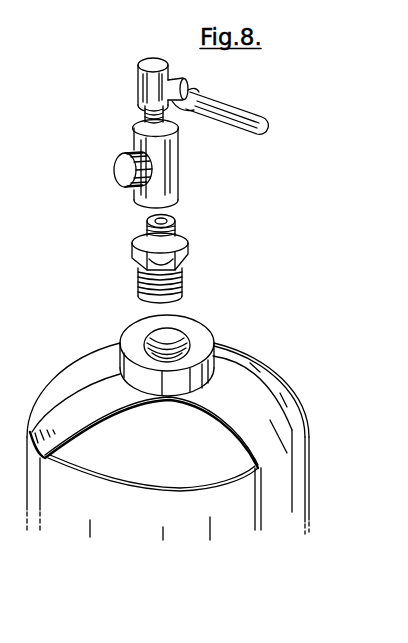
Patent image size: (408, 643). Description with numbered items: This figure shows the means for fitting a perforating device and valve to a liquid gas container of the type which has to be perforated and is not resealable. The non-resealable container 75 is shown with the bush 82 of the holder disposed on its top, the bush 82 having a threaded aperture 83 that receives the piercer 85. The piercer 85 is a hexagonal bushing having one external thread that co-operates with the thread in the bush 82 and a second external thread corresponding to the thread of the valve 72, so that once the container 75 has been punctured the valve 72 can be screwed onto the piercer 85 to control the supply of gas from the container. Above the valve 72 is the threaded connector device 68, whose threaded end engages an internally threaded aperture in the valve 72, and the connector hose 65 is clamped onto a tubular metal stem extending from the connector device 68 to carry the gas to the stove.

The connector hose 65 is at (228, 109).
The threaded connector device 68 is at (148, 63).
The valve 72 is at (164, 177).
The non-resealable container 75 is at (271, 380).
The bush 82 is at (168, 398).
The threaded aperture 83 is at (188, 344).
The piercer 85 is at (190, 249).